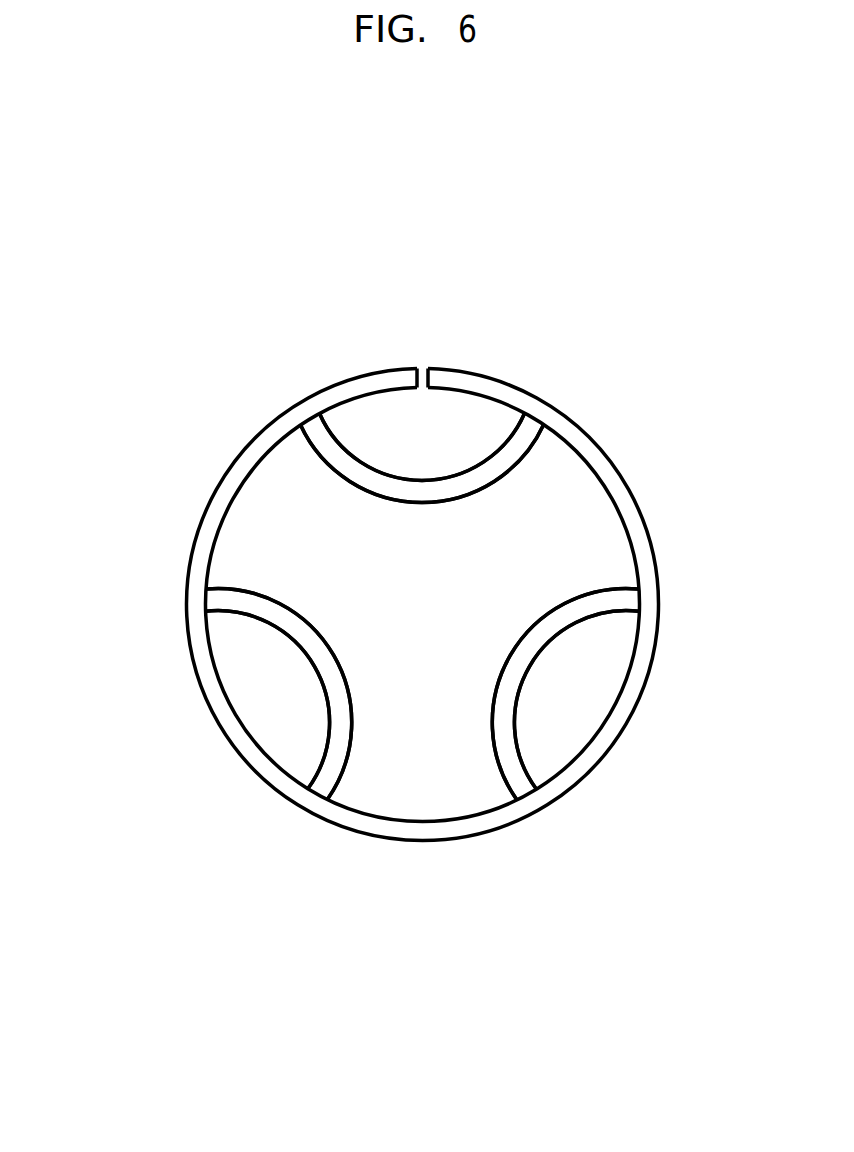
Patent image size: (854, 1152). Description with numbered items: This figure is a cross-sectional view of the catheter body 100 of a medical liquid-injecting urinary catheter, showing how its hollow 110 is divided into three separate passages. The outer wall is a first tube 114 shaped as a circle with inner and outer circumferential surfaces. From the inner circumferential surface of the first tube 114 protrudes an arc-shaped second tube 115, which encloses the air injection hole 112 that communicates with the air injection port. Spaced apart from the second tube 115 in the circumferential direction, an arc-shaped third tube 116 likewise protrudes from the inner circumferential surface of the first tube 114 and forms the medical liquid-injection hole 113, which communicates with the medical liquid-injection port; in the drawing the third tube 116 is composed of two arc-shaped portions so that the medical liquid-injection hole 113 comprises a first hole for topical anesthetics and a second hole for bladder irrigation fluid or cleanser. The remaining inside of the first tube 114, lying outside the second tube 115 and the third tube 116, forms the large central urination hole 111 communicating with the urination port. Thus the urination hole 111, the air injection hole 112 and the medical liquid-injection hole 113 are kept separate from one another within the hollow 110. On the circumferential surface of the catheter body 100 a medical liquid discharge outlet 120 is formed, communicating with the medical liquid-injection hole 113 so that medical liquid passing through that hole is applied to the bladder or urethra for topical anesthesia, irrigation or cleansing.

The catheter body 100 is at (268, 402).
The hollow 110 is at (590, 866).
The urination hole 111 is at (434, 597).
The air injection hole 112 is at (578, 704).
The medical liquid-injection hole 113 is at (457, 428).
The first tube 114 is at (633, 518).
The second tube 115 is at (578, 612).
The third tube 116 is at (492, 470).
The medical liquid discharge outlet 120 is at (428, 372).